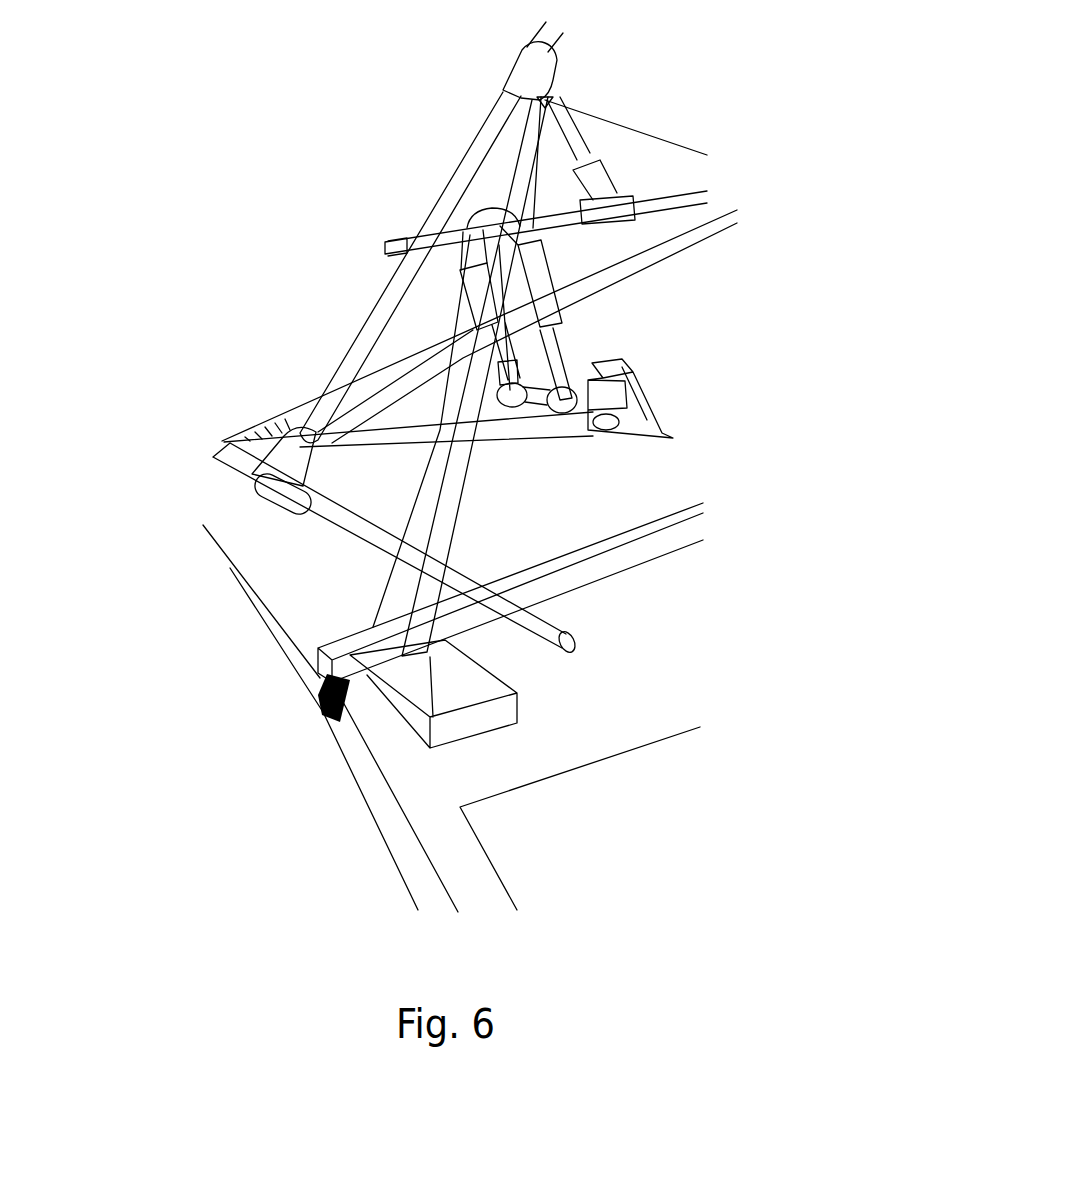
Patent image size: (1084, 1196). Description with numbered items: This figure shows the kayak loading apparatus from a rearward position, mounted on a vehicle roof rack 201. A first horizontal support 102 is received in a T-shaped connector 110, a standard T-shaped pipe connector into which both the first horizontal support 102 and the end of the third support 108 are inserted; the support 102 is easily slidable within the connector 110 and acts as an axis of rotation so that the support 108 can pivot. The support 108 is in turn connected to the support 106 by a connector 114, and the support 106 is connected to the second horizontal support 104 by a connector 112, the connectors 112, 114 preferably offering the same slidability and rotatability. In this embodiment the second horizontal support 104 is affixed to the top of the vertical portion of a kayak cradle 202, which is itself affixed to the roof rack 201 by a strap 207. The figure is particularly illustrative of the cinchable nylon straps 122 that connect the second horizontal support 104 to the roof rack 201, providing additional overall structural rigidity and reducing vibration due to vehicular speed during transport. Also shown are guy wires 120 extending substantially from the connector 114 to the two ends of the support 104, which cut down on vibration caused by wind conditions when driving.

The first horizontal support 102 is at (589, 647).
The second horizontal support 104 is at (382, 245).
The support 106 is at (578, 118).
The third support 108 is at (357, 322).
The T-shaped connector 110 is at (252, 498).
The connector 112 is at (615, 172).
The connector 114 is at (500, 63).
The guy wires 120 is at (582, 106).
The nylon straps 122 is at (456, 464).
The roof rack 201 is at (650, 545).
The kayak cradle 202 is at (538, 281).
The strap 207 is at (493, 221).